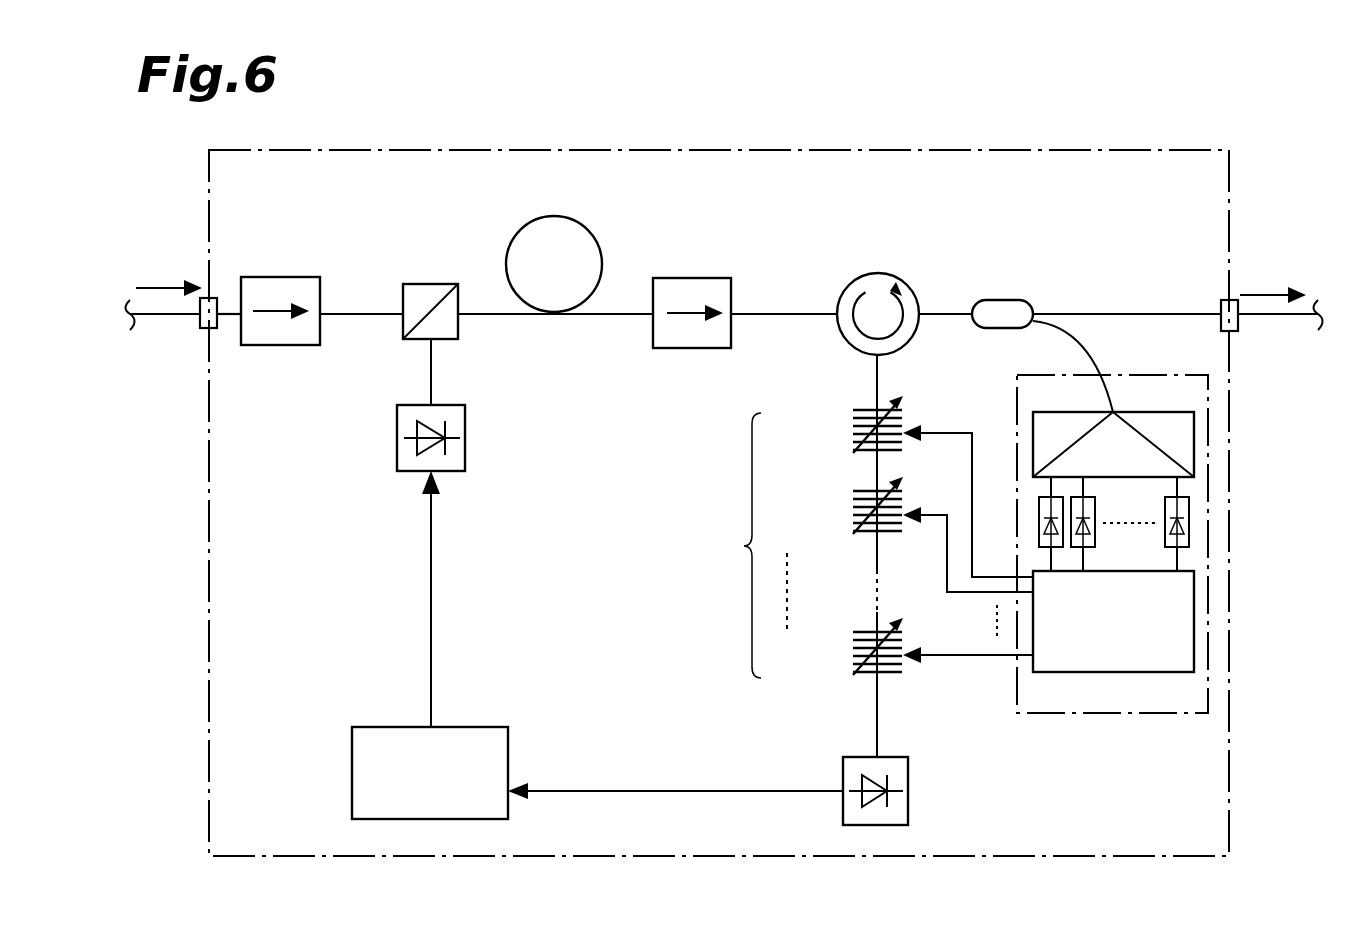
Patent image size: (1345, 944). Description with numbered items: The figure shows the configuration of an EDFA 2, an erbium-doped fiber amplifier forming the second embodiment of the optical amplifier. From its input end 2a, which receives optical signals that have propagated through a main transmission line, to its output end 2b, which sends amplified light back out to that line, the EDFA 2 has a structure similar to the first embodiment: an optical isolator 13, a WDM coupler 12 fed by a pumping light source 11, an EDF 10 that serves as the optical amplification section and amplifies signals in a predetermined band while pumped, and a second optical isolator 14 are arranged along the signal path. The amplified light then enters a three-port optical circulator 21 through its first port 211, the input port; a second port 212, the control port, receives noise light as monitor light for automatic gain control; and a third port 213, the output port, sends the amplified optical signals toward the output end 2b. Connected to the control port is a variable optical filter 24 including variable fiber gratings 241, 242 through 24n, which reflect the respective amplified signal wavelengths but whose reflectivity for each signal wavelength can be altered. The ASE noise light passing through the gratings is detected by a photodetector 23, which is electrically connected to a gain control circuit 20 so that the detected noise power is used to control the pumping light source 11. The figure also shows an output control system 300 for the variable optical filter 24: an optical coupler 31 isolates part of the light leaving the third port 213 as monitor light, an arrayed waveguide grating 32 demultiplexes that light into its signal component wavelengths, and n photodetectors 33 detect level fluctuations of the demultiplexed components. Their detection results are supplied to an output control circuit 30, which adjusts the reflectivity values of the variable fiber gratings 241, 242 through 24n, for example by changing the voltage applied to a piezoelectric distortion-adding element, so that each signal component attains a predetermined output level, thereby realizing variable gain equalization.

The EDFA 2 is at (1233, 222).
The input end 2a is at (200, 326).
The output end 2b is at (1238, 324).
The EDF 10 is at (593, 237).
The pumping light source 11 is at (466, 440).
The WDM coupler 12 is at (426, 284).
The optical isolator 13 is at (276, 277).
The optical isolator 14 is at (683, 278).
The gain control circuit 20 is at (473, 727).
The optical circulator 21 is at (865, 276).
The first port 211 is at (838, 312).
The second port 212 is at (864, 349).
The third port 213 is at (907, 343).
The photodetector 23 is at (843, 772).
The variable optical filter 24 is at (870, 516).
The variable fiber grating 241 is at (853, 433).
The variable fiber grating 242 is at (853, 515).
The variable fiber grating 24n is at (853, 655).
The output control circuit 30 is at (1194, 625).
The output control system 300 is at (1172, 714).
The optical coupler 31 is at (1002, 300).
The arrayed waveguide grating 32 is at (1194, 447).
The photodetectors 33 is at (1189, 530).